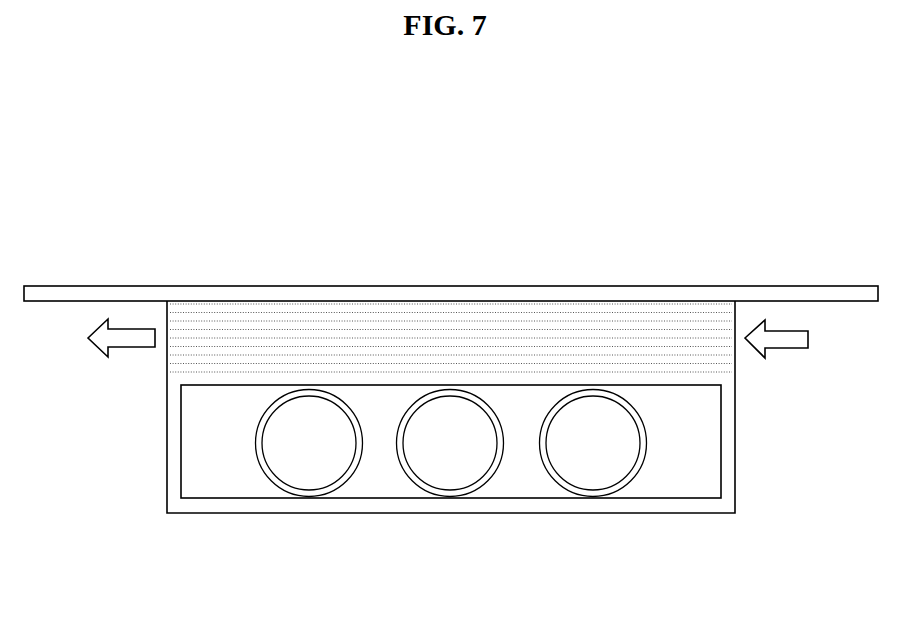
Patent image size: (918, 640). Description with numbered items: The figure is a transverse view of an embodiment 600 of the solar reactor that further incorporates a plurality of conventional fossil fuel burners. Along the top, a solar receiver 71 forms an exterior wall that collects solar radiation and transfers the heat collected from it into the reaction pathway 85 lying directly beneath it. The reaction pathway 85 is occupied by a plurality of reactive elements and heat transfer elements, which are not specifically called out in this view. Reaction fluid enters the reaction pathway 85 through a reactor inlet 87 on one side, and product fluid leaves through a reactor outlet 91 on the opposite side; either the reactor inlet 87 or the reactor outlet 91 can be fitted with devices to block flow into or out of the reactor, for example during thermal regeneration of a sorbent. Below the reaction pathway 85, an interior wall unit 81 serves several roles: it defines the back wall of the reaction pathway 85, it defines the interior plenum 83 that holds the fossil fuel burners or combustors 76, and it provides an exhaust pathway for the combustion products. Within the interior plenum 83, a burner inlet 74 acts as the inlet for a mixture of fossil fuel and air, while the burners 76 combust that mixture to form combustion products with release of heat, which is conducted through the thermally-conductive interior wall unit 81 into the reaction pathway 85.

The embodiment of the solar reactor 600 is at (74, 216).
The solar receiver 71 is at (690, 284).
The interior wall unit 81 is at (185, 380).
The reaction pathway 85 is at (462, 322).
The interior plenum 83 is at (693, 441).
The burner inlet 74 is at (449, 460).
The burners 76 is at (335, 484).
The reactor outlet 91 is at (107, 338).
The reactor inlet 87 is at (794, 339).